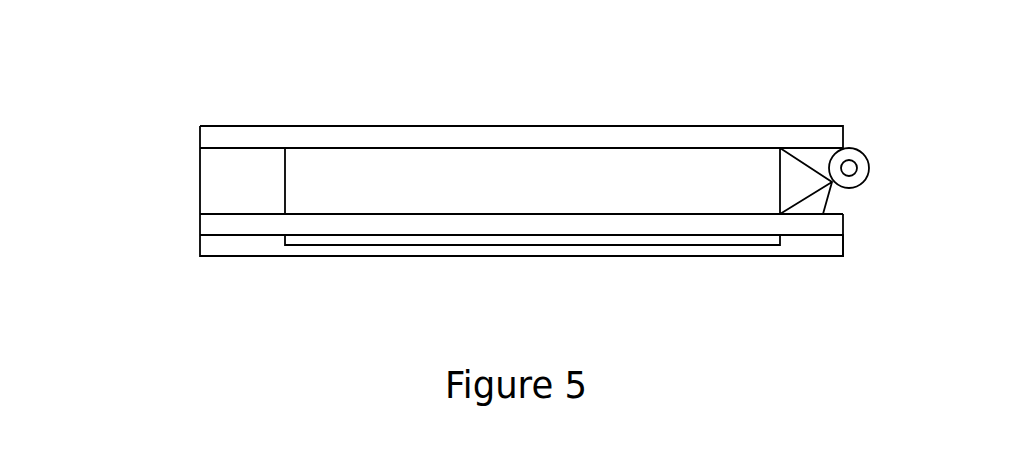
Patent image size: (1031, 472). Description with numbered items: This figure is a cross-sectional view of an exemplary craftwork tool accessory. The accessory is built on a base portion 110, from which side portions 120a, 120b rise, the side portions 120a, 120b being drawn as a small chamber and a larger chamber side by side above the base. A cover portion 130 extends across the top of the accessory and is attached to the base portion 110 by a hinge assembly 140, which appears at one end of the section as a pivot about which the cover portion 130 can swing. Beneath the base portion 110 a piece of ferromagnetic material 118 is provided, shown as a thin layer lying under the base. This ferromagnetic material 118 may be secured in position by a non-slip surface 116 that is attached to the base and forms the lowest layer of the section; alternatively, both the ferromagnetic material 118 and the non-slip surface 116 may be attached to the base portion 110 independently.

The base portion 110 is at (217, 223).
The non-slip surface 116 is at (795, 255).
The ferromagnetic material 118 is at (465, 243).
The side portion 120a is at (433, 173).
The side portion 120b is at (205, 178).
The cover portion 130 is at (598, 127).
The hinge assembly 140 is at (868, 185).